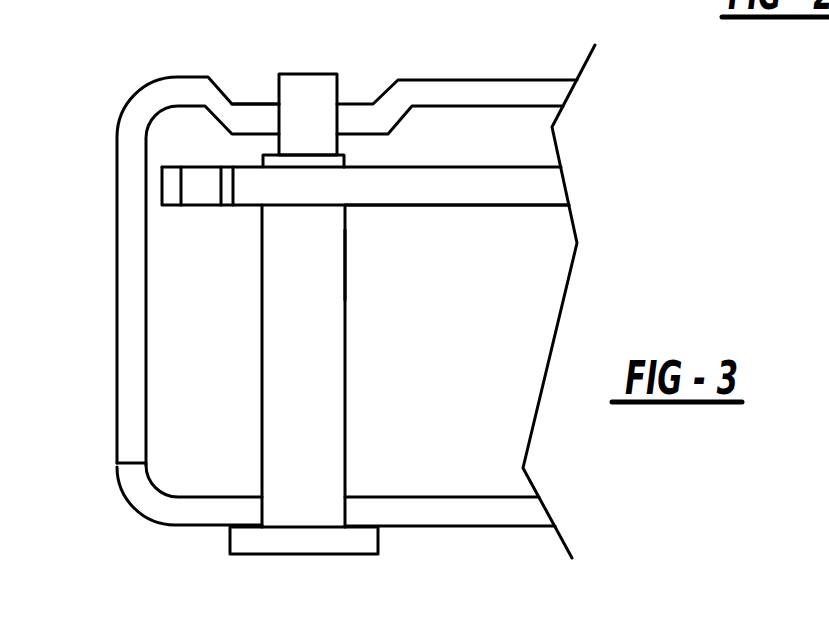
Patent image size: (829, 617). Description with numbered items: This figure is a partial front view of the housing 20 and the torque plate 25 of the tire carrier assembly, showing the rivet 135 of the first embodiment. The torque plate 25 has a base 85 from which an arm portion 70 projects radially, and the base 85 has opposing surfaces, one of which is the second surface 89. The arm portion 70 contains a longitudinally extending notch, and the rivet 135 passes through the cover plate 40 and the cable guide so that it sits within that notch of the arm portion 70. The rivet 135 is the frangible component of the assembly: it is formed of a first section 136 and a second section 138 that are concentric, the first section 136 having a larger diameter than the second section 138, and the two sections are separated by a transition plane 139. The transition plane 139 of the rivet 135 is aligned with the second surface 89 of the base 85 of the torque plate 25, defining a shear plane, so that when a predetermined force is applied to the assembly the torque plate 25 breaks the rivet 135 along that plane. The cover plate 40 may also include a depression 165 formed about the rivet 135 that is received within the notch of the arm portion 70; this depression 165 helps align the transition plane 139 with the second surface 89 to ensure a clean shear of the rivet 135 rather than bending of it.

The housing 20 is at (448, 527).
The torque plate 25 is at (543, 182).
The cover plate 40 is at (493, 82).
The arm portion 70 is at (382, 192).
The base 85 is at (477, 205).
The second surface 89 is at (445, 167).
The rivet 135 is at (330, 362).
The first section 136 is at (345, 255).
The second section 138 is at (323, 90).
The transition plane 139 is at (263, 157).
The depression 165 is at (256, 104).